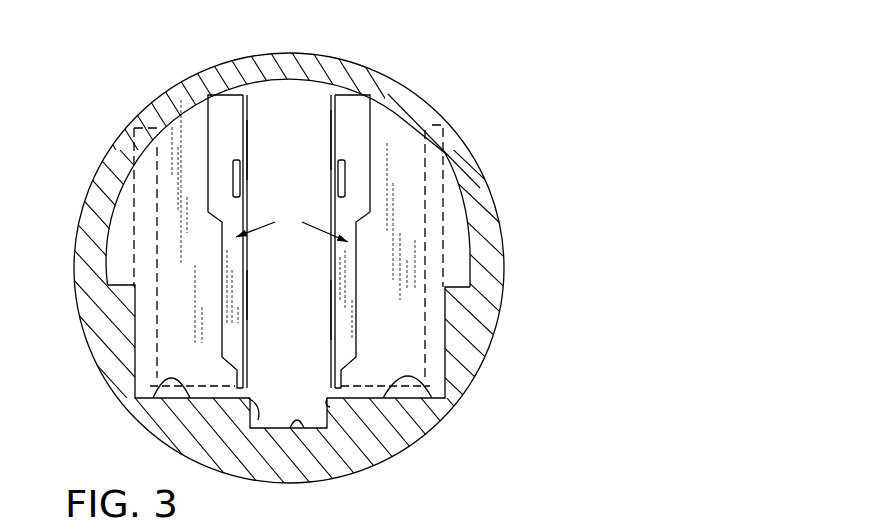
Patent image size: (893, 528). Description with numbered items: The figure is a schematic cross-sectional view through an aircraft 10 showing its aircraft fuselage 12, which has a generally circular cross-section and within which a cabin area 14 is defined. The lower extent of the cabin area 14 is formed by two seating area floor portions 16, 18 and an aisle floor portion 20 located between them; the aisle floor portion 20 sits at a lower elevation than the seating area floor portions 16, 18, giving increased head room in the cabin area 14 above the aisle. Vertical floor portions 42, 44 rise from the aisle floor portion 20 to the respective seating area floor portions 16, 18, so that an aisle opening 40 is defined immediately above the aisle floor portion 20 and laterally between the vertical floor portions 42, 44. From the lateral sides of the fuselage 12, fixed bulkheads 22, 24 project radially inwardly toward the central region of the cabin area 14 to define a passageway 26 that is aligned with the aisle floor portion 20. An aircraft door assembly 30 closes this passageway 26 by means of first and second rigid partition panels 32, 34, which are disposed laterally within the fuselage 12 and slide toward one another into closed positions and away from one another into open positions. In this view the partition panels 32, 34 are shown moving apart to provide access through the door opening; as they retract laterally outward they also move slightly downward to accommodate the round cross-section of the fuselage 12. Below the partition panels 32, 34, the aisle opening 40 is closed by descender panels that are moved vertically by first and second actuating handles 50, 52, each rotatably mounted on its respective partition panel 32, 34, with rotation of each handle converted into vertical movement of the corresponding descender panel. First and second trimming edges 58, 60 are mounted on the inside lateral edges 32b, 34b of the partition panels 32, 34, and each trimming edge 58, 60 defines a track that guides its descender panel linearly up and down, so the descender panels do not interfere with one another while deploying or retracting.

The aircraft 10 is at (490, 130).
The aircraft fuselage 12 is at (495, 246).
The cabin area 14 is at (290, 103).
The seating area floor portion 16 is at (158, 388).
The seating area floor portion 18 is at (413, 377).
The aisle floor portion 20 is at (300, 420).
The fixed bulkhead 22 is at (122, 227).
The fixed bulkhead 24 is at (462, 268).
The passageway 26 is at (307, 284).
The aircraft door assembly 30 is at (244, 83).
The first partition panel 32 is at (233, 103).
The inside lateral edge of the first partition panel 32b is at (247, 146).
The second partition panel 34 is at (347, 105).
The inside lateral edge of the second partition panel 34b is at (334, 132).
The aisle opening 40 is at (277, 413).
The vertical floor portion 42 is at (258, 412).
The vertical floor portion 44 is at (330, 426).
The first actuating handle 50 is at (232, 178).
The second actuating handle 52 is at (345, 181).
The first trimming edge 58 is at (247, 293).
The second trimming edge 60 is at (331, 312).